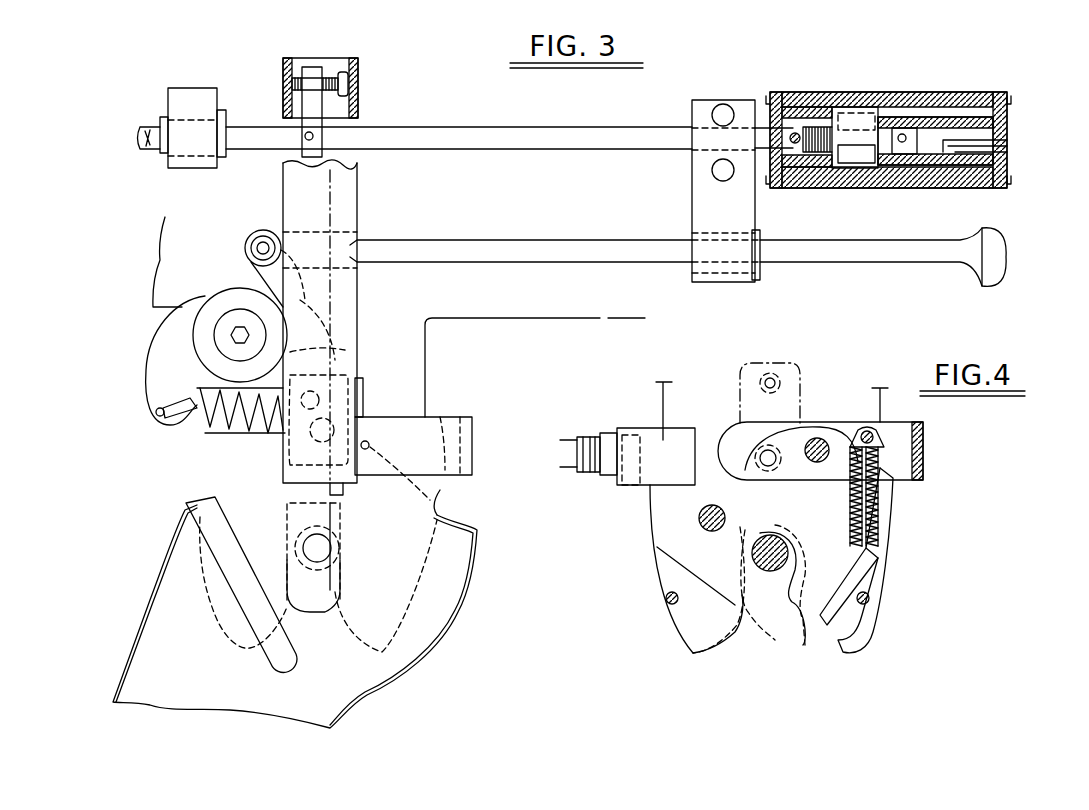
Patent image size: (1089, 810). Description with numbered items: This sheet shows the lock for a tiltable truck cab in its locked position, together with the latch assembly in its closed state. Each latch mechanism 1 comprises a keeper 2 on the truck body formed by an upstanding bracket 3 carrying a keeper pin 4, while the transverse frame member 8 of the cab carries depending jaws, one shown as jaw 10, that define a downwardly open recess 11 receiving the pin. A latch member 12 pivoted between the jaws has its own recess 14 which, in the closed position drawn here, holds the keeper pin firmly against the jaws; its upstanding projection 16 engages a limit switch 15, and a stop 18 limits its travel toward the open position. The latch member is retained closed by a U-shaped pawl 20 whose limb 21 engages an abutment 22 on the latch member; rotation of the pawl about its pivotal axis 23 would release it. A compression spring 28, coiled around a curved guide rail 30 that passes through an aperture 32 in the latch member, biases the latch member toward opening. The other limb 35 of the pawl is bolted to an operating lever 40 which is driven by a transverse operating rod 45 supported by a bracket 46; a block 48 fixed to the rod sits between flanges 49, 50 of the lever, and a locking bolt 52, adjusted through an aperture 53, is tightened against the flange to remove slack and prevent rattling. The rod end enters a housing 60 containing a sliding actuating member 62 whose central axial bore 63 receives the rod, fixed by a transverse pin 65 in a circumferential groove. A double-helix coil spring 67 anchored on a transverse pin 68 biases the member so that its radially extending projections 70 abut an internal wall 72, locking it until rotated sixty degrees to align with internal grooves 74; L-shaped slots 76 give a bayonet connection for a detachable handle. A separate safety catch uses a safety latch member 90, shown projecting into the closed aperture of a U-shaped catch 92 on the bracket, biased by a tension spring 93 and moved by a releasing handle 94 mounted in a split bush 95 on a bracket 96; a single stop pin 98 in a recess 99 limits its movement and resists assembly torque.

In FIG. 3, the latch mechanism 1 is at (490, 490).
In FIG. 3, the keeper 2 is at (472, 659).
In FIG. 3, the upstanding bracket 3 is at (450, 596).
In FIG. 3, the keeper pin 4 is at (340, 548).
In FIG. 4, the keeper pin 4 is at (752, 555).
In FIG. 3, the transverse frame member 8 is at (552, 318).
In FIG. 4, the depending jaw 10 is at (872, 577).
In FIG. 4, the recess 11 is at (738, 647).
In FIG. 4, the latch member 12 is at (672, 540).
In FIG. 4, the recess 14 is at (803, 610).
In FIG. 4, the limit switch 15 is at (588, 462).
In FIG. 4, the upstanding projection 16 is at (663, 430).
In FIG. 4, the stop 18 is at (666, 598).
In FIG. 3, the pawl 20 is at (430, 425).
In FIG. 4, the pawl 20 is at (814, 440).
In FIG. 4, the limb 21 is at (727, 430).
In FIG. 4, the abutment 22 is at (750, 478).
In FIG. 4, the pivotal axis 23 is at (865, 420).
In FIG. 4, the compression spring 28 is at (878, 500).
In FIG. 4, the guide rail 30 is at (912, 462).
In FIG. 4, the aperture 32 is at (866, 548).
In FIG. 4, the limb 35 is at (800, 370).
In FIG. 3, the operating lever 40 is at (357, 298).
In FIG. 3, the transverse operating rod 45 is at (525, 127).
In FIG. 3, the bracket 46 is at (200, 168).
In FIG. 3, the block 48 is at (310, 108).
In FIG. 3, the flange 49 is at (286, 62).
In FIG. 3, the flange 50 is at (358, 60).
In FIG. 3, the locking bolt 52 is at (328, 72).
In FIG. 3, the aperture 53 is at (356, 84).
In FIG. 3, the housing 60 is at (826, 100).
In FIG. 3, the actuating member 62 is at (860, 118).
In FIG. 3, the central axial bore 63 is at (1007, 125).
In FIG. 3, the transverse pin 65 is at (905, 135).
In FIG. 3, the coil spring 67 is at (820, 128).
In FIG. 3, the transverse pin 68 is at (790, 137).
In FIG. 3, the radially extending projections 70 is at (852, 162).
In FIG. 3, the internal wall 72 is at (877, 168).
In FIG. 3, the internal grooves 74 is at (993, 103).
In FIG. 3, the L-shaped slots 76 is at (1007, 145).
In FIG. 3, the safety latch member 90 is at (275, 475).
In FIG. 3, the U-shaped catch 92 is at (250, 546).
In FIG. 3, the tension spring 93 is at (190, 432).
In FIG. 3, the releasing handle 94 is at (823, 262).
In FIG. 3, the split bush 95 is at (758, 232).
In FIG. 3, the bracket 96 is at (692, 208).
In FIG. 3, the stop pin 98 is at (300, 332).
In FIG. 3, the recess 99 is at (345, 355).